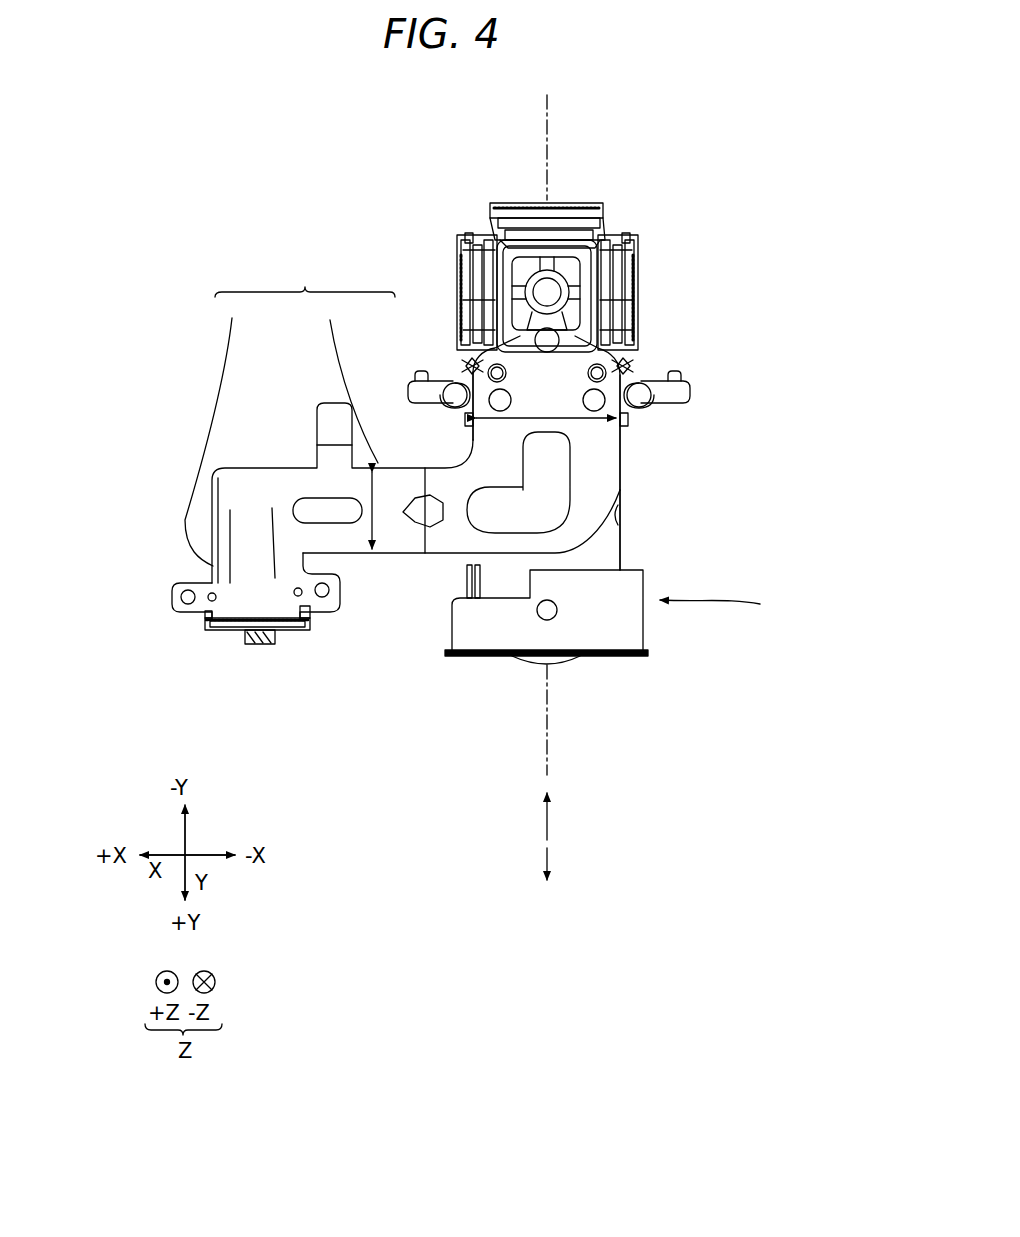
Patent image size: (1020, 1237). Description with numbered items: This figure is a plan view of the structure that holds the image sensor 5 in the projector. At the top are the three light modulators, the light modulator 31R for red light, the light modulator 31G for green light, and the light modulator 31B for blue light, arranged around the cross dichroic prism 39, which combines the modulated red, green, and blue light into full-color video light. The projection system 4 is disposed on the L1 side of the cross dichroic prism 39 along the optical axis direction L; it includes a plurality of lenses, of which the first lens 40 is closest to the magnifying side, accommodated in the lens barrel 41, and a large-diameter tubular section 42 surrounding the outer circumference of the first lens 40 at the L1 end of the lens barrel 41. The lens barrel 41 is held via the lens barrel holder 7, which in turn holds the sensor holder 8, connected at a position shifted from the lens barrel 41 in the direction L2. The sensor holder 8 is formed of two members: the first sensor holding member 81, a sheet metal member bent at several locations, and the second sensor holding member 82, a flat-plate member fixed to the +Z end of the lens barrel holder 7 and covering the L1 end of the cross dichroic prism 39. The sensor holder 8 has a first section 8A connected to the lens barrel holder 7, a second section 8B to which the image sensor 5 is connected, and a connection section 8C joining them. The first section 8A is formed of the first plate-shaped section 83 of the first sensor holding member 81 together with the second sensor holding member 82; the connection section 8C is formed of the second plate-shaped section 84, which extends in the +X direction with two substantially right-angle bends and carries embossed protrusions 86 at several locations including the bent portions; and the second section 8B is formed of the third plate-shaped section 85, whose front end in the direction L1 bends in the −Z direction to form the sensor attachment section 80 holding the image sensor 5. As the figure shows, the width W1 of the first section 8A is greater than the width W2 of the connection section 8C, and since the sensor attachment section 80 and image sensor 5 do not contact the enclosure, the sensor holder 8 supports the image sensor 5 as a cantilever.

The projection system 4 is at (718, 611).
The image sensor 5 is at (258, 645).
The lens barrel holder 7 is at (690, 393).
The sensor holder 8 is at (305, 278).
The first section 8A is at (455, 366).
The second section 8B is at (230, 441).
The connection section 8C is at (344, 381).
The light modulator 31B is at (456, 280).
The light modulator 31G is at (550, 198).
The light modulator 31R is at (640, 292).
The cross dichroic prism 39 is at (597, 245).
The first lens 40 is at (560, 656).
The lens barrel 41 is at (620, 548).
The large-diameter tubular section 42 is at (635, 628).
The sensor attachment section 80 is at (205, 620).
The first sensor holding member 81 is at (572, 364).
The second sensor holding member 82 is at (628, 366).
The first plate-shaped section 83 is at (600, 443).
The second plate-shaped section 84 is at (380, 556).
The third plate-shaped section 85 is at (212, 583).
The embossed protrusions 86 is at (318, 505).
The optical axis direction L is at (548, 745).
The direction L1 is at (564, 864).
The direction L2 is at (564, 816).
The width W1 is at (546, 406).
The width W2 is at (375, 512).